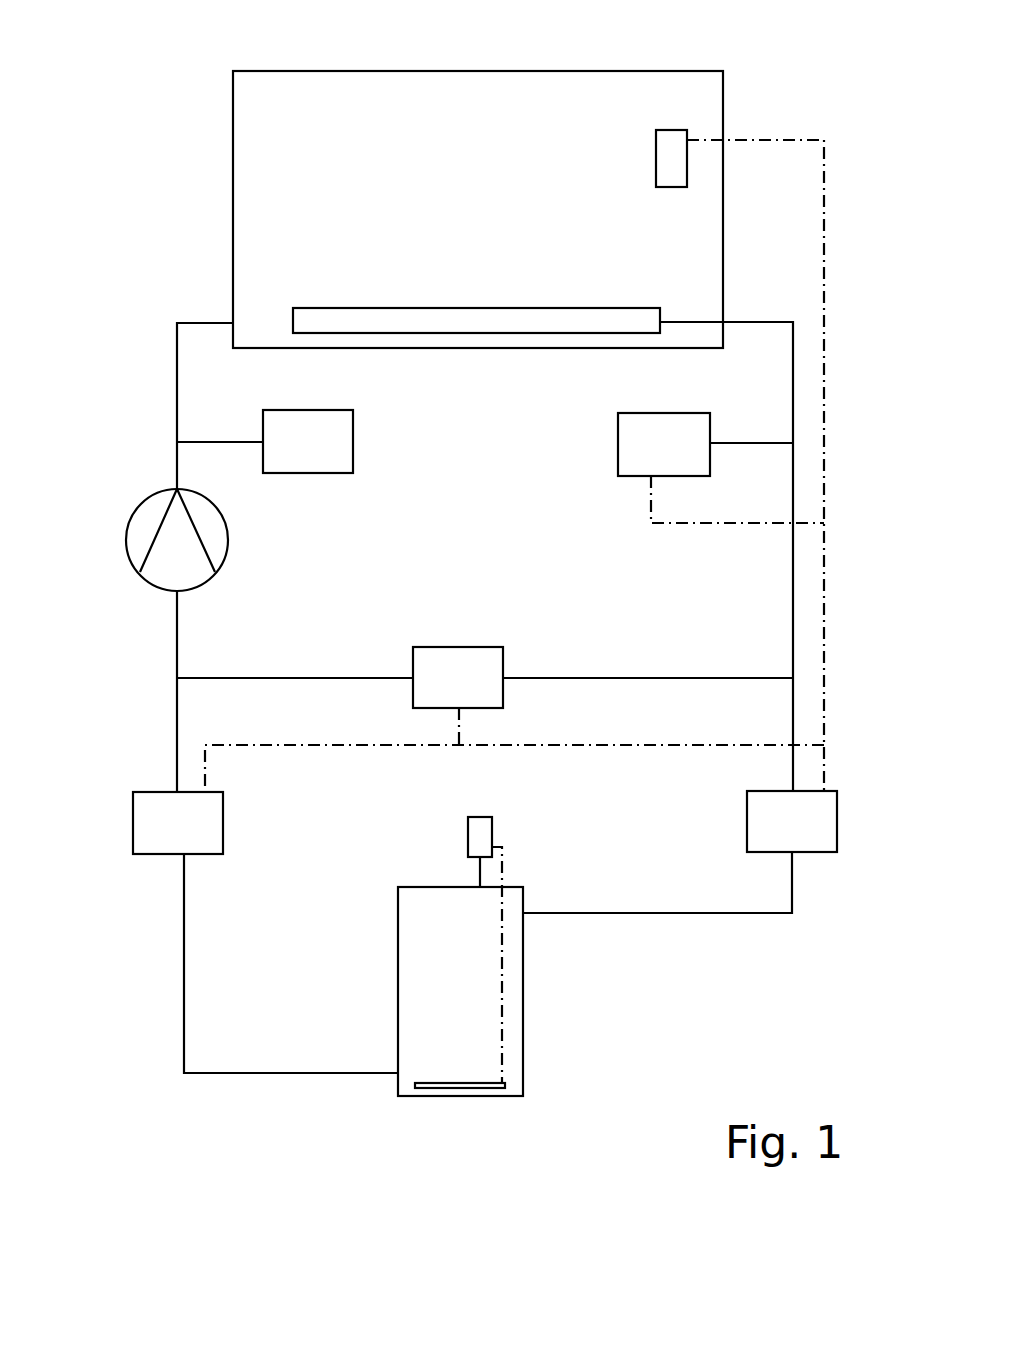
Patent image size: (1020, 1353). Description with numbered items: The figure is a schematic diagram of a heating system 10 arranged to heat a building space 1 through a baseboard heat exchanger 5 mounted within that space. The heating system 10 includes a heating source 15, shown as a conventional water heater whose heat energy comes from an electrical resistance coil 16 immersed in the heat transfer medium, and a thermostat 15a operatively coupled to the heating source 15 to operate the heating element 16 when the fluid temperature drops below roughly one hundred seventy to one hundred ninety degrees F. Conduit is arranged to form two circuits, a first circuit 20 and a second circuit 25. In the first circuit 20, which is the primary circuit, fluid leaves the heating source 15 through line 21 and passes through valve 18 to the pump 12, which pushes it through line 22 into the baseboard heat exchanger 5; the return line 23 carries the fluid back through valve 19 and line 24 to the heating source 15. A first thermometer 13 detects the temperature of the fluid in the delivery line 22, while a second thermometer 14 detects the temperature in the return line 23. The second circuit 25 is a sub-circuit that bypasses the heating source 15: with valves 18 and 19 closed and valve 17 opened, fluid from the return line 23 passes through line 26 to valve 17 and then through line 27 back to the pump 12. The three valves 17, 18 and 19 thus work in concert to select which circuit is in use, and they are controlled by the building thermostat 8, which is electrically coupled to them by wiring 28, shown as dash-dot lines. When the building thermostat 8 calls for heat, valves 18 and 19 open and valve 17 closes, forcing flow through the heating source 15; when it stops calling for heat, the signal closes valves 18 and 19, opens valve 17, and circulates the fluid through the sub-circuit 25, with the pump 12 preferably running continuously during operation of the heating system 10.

The heating system 10 is at (174, 112).
The building space 1 is at (458, 71).
The building thermostat 8 is at (656, 138).
The baseboard heat exchanger 5 is at (470, 308).
The wiring 28 is at (788, 140).
The delivery line 22 is at (173, 343).
The return line 23 is at (780, 322).
The first thermometer 13 is at (353, 418).
The second thermometer 14 is at (648, 413).
The pump 12 is at (218, 510).
The line 27 is at (267, 678).
The valve 17 is at (453, 647).
The line 26 is at (623, 678).
The valve 18 is at (223, 802).
The valve 19 is at (747, 805).
The second circuit 25 is at (396, 778).
The line 21 is at (183, 995).
The line 24 is at (663, 913).
The heating source 15 is at (400, 962).
The thermostat 15a is at (492, 825).
The electrical resistance coil 16 is at (483, 1083).
The first circuit 20 is at (755, 965).